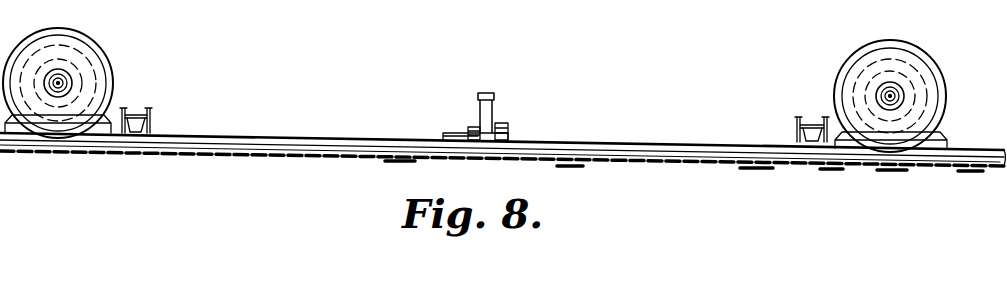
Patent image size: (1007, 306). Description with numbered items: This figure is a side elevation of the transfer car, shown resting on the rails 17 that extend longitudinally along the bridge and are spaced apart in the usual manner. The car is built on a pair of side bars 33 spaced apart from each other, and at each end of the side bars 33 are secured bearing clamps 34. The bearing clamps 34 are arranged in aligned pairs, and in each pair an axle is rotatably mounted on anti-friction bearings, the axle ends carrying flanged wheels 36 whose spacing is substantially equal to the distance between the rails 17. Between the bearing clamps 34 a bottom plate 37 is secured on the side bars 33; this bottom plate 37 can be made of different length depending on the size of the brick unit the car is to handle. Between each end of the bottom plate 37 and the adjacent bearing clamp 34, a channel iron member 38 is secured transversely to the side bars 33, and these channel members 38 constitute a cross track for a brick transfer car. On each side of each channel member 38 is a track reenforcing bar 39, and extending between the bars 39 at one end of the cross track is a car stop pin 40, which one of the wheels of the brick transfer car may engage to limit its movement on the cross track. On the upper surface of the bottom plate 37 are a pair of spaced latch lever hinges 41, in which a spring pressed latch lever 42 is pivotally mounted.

The rails 17 is at (972, 154).
The side bars 33 is at (368, 152).
The bearing clamps 34 is at (0, 68).
The flanged wheels 36 is at (82, 40).
The bottom plate 37 is at (606, 141).
The channel iron member 38 is at (133, 134).
The track reenforcing bar 39 is at (124, 107).
The car stop pin 40 is at (137, 114).
The latch lever hinges 41 is at (468, 127).
The spring pressed latch lever 42 is at (493, 106).